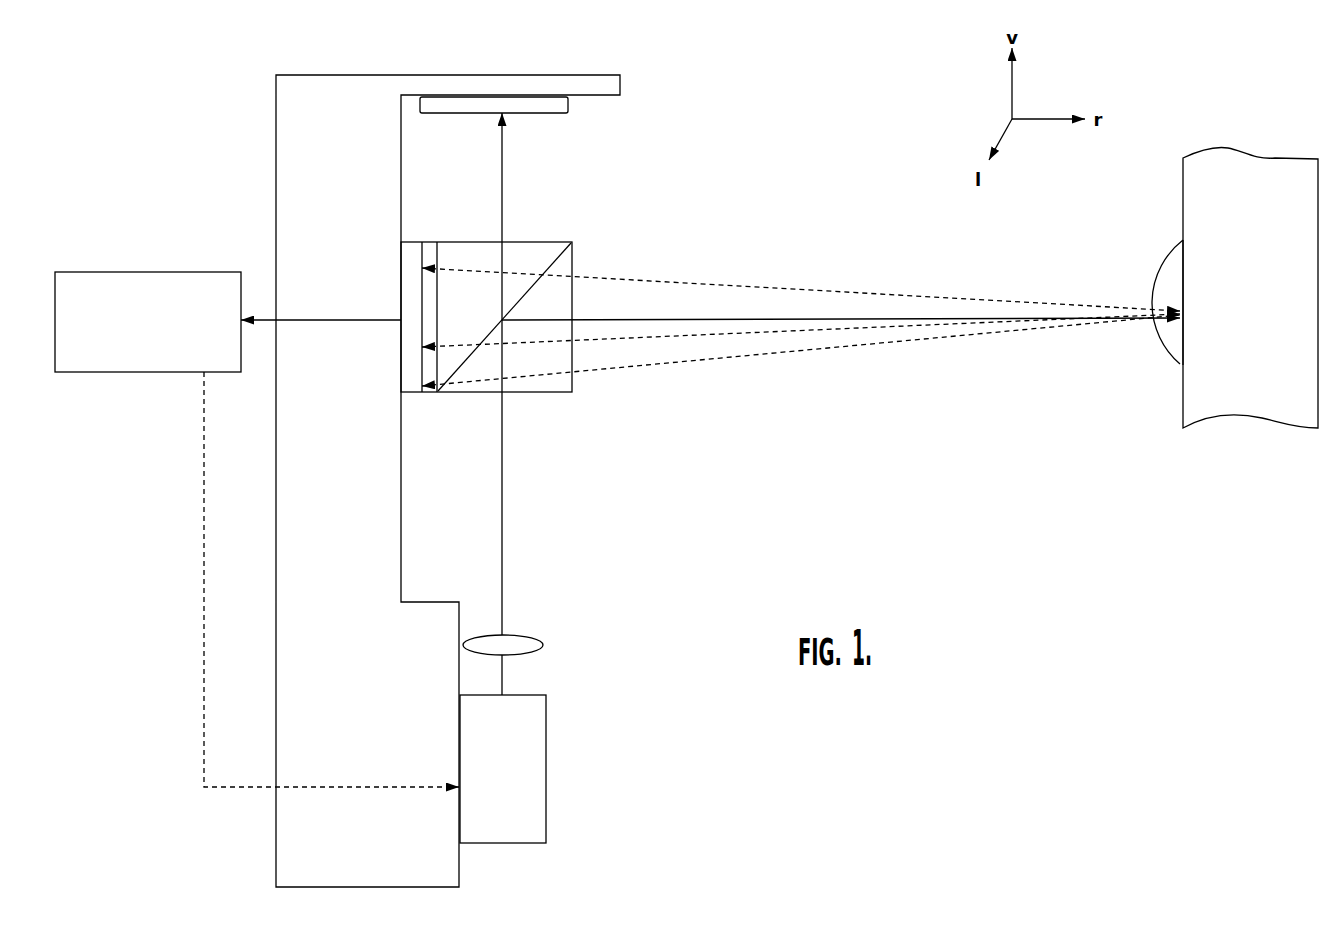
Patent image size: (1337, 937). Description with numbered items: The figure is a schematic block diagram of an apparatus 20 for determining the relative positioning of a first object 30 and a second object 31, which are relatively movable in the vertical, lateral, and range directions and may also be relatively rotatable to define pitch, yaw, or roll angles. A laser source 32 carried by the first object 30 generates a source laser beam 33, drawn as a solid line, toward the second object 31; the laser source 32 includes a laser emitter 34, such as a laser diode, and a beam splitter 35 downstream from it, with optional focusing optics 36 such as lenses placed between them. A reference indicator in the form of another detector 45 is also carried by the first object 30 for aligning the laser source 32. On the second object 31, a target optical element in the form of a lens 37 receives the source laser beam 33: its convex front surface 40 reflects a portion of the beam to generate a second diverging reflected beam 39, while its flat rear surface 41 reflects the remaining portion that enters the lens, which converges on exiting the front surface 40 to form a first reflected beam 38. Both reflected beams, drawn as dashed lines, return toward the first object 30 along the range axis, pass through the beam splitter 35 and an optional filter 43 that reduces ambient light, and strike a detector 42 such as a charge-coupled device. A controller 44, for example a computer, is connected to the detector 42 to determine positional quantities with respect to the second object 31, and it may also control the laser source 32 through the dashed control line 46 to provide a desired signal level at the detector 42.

The apparatus 20 is at (186, 79).
The first object 30 is at (277, 142).
The second object 31 is at (1275, 157).
The laser source 32 is at (820, 485).
The source laser beam 33 is at (760, 320).
The laser emitter 34 is at (546, 803).
The beam splitter 35 is at (545, 242).
The focusing optics 36 is at (537, 640).
The lens 37 is at (1151, 354).
The first reflected beam 38 is at (862, 290).
The second diverging reflected beam 39 is at (750, 355).
The convex front surface 40 is at (1155, 283).
The flat rear surface 41 is at (1182, 265).
The controller 44 is at (150, 372).
The detector 42 is at (411, 242).
The filter 43 is at (430, 242).
The detector 45 is at (570, 99).
The control line 46 is at (204, 678).